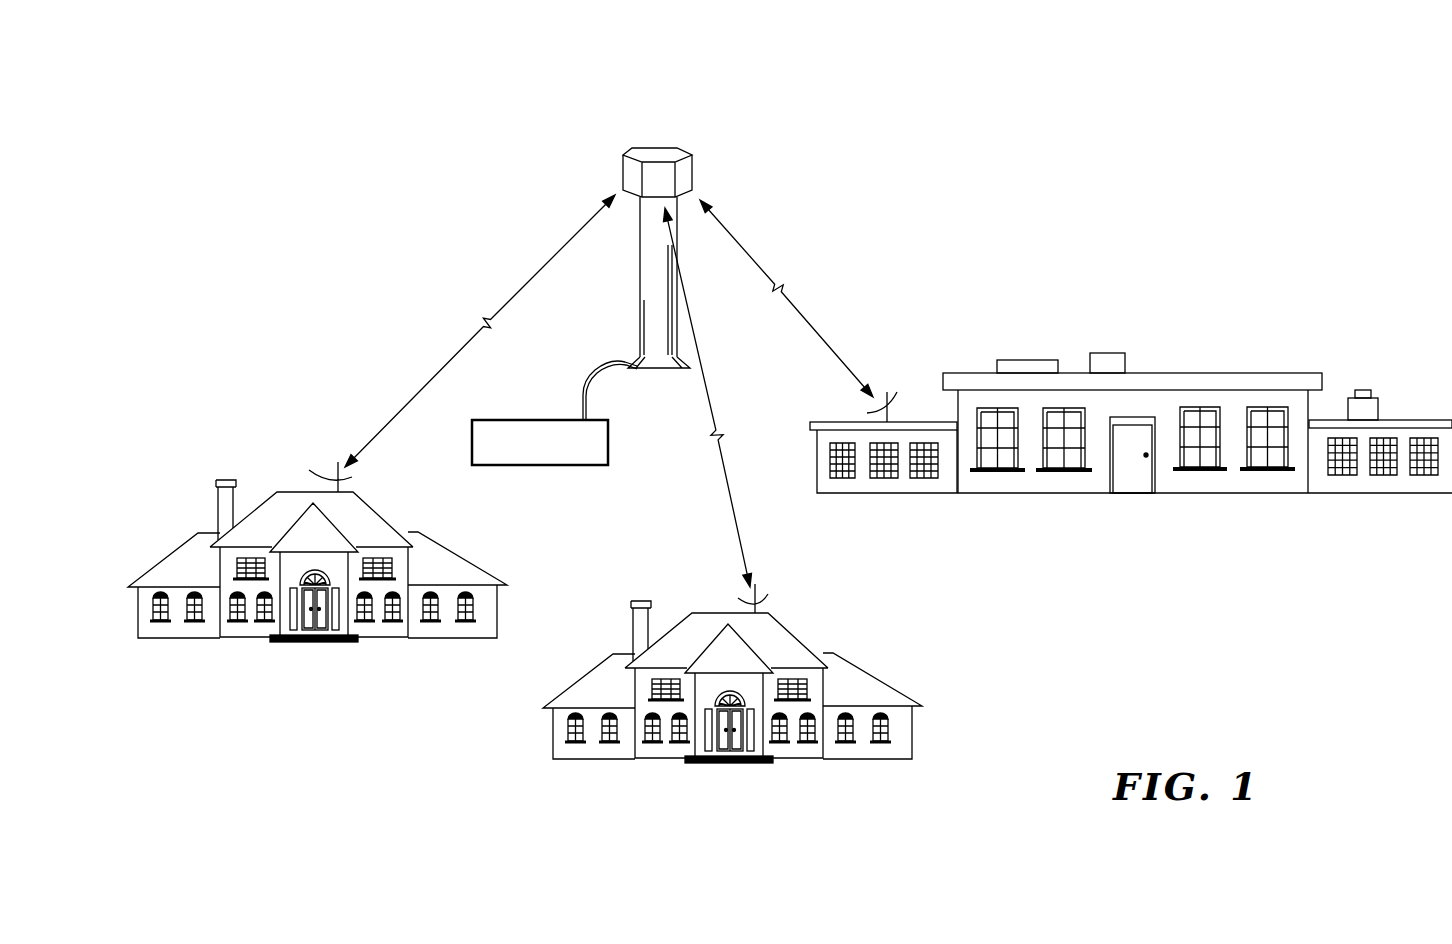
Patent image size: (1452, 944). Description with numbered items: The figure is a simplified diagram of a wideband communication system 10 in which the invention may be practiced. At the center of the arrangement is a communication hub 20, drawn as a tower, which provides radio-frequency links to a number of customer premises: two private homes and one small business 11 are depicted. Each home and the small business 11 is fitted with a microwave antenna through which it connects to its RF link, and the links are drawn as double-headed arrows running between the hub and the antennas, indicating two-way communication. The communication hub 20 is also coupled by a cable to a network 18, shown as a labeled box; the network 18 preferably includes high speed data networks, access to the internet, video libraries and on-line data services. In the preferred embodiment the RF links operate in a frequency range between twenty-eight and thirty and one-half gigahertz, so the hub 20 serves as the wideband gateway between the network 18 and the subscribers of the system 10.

The wideband communication system 10 is at (1143, 677).
The small business 11 is at (1233, 372).
The network 18 is at (572, 466).
The communication hub 20 is at (650, 150).